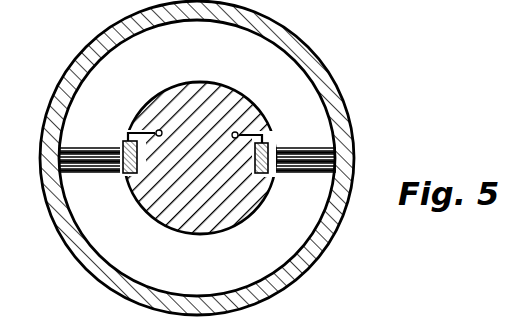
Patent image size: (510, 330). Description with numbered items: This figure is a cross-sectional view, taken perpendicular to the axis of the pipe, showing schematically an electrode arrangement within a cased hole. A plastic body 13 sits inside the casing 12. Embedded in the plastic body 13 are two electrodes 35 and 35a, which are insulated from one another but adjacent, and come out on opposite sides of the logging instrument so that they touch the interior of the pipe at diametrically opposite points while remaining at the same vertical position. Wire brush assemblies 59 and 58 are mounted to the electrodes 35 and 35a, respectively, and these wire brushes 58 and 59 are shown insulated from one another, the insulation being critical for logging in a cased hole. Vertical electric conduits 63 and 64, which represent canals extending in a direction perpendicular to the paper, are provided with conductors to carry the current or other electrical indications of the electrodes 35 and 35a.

The casing 12 is at (290, 44).
The plastic body 13 is at (216, 88).
The electrode 35 is at (124, 174).
The electrode 35a is at (268, 176).
The wire brush assembly 58 is at (290, 148).
The wire brush assembly 59 is at (103, 146).
The vertical electric conduit 63 is at (160, 128).
The vertical electric conduit 64 is at (242, 132).